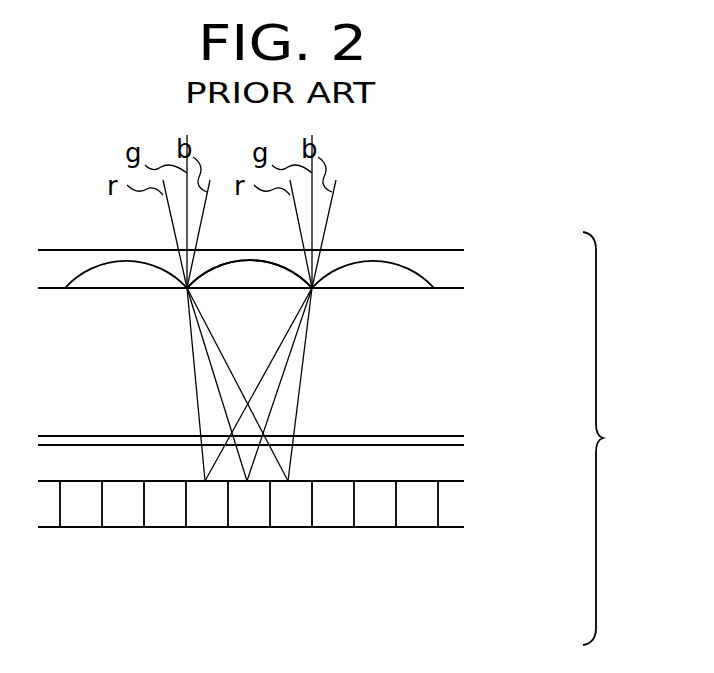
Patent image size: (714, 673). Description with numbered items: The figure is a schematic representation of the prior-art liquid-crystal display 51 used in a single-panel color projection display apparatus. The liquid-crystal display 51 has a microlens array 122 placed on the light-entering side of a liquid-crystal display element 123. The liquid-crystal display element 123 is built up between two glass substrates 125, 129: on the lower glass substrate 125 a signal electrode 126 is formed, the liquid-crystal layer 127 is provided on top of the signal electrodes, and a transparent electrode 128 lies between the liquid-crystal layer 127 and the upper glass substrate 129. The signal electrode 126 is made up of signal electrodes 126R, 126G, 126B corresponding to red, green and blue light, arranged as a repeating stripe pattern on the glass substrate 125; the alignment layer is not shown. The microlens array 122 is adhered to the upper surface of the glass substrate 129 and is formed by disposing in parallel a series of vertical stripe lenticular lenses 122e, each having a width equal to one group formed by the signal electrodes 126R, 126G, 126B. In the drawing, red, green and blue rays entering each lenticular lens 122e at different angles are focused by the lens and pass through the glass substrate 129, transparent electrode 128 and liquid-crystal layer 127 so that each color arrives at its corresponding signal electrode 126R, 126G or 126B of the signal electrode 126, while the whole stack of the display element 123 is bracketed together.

The liquid-crystal display 51 is at (522, 162).
The microlens array 122 is at (458, 267).
The lenticular lens 122e is at (238, 272).
The liquid-crystal display element 123 is at (620, 438).
The glass substrate 129 is at (452, 382).
The transparent electrode 128 is at (458, 434).
The liquid-crystal layer 127 is at (456, 470).
The signal electrode 126 is at (456, 507).
The signal electrode 126B is at (197, 528).
The signal electrode 126G is at (255, 528).
The signal electrode 126R is at (305, 528).
The glass substrate 125 is at (448, 620).